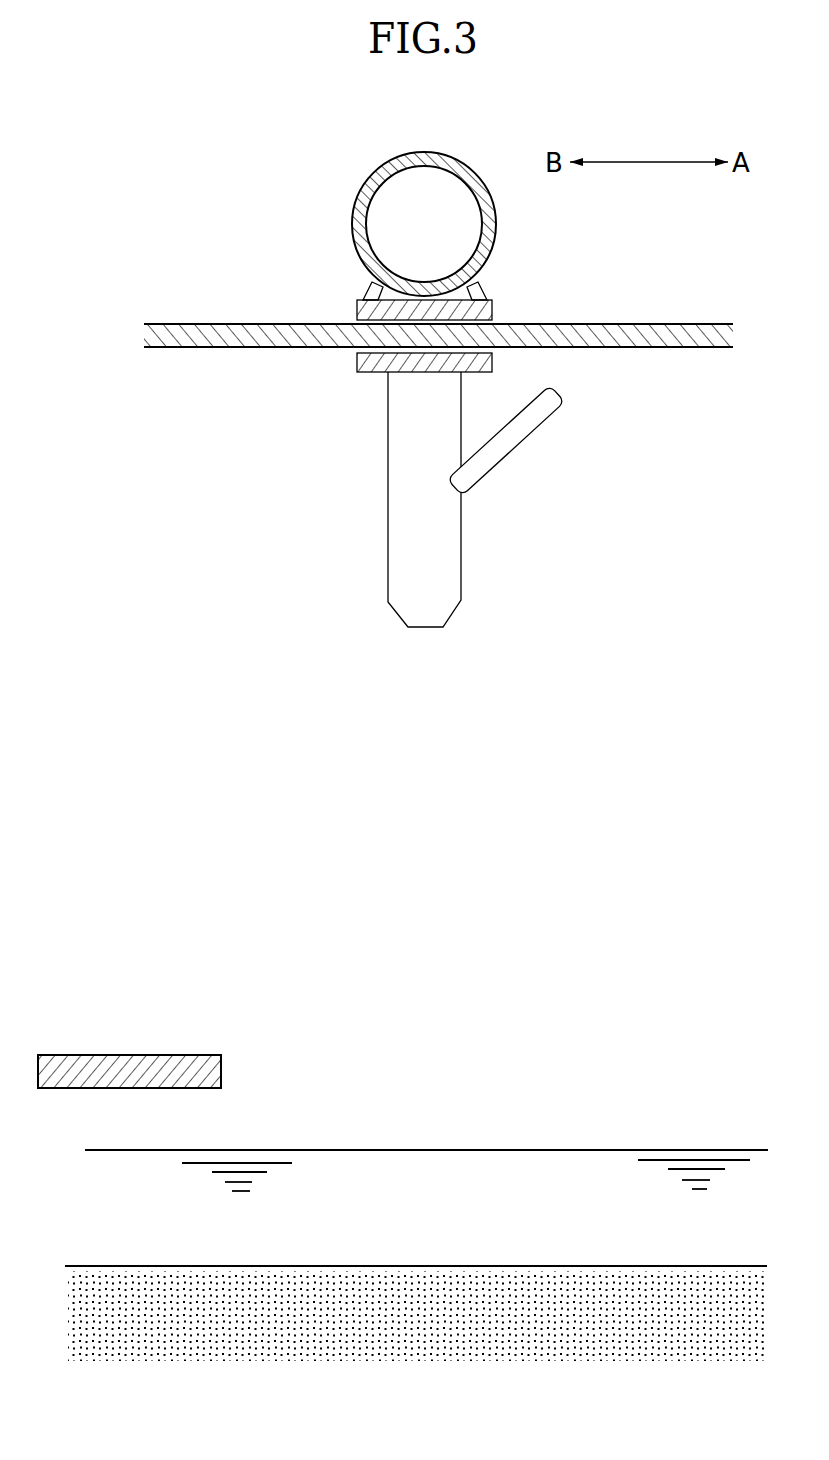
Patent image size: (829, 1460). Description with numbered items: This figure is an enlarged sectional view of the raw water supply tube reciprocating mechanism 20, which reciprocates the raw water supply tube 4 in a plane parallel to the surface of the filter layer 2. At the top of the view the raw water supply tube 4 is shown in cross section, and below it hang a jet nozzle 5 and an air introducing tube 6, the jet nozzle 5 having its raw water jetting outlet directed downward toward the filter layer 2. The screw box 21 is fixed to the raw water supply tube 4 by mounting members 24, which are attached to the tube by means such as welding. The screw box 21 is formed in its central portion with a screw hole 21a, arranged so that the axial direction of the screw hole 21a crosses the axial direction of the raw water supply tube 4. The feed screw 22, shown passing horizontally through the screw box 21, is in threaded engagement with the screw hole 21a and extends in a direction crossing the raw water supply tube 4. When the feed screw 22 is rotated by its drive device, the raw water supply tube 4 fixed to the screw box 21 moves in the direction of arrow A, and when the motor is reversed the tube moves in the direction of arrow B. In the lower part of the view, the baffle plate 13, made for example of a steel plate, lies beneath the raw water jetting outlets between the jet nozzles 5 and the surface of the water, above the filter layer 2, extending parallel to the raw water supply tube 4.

The filter layer 2 is at (427, 1278).
The raw water supply tube 4 is at (362, 187).
The jet nozzles 5 is at (428, 591).
The air introducing tubes 6 is at (518, 425).
The baffle plate 13 is at (143, 1070).
The raw water supply tube reciprocating mechanism 20 is at (387, 369).
The screw box 21 is at (355, 305).
The screw hole 21a is at (368, 372).
The feed screw 22 is at (677, 350).
The mounting members 24 is at (372, 293).